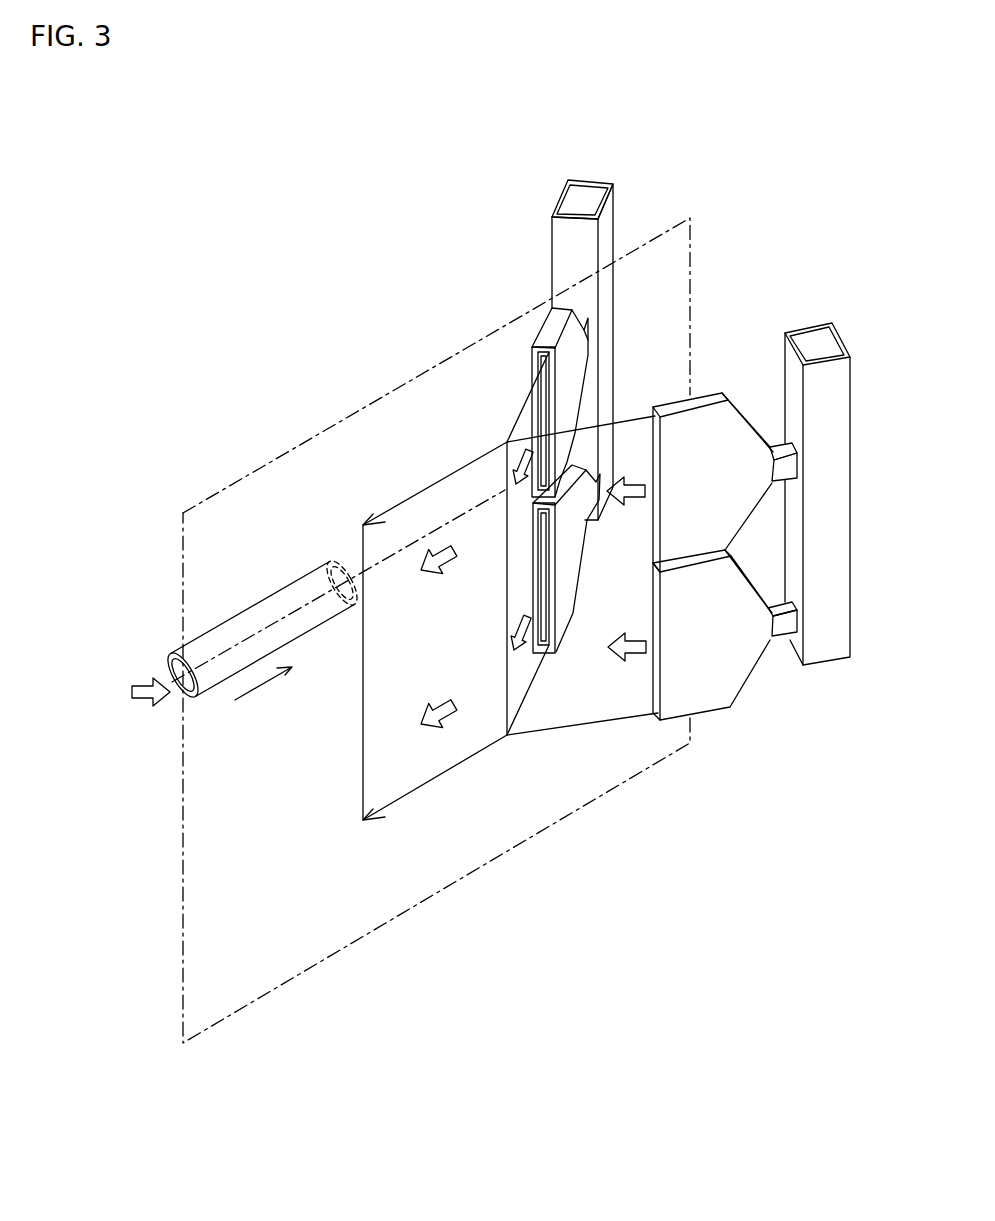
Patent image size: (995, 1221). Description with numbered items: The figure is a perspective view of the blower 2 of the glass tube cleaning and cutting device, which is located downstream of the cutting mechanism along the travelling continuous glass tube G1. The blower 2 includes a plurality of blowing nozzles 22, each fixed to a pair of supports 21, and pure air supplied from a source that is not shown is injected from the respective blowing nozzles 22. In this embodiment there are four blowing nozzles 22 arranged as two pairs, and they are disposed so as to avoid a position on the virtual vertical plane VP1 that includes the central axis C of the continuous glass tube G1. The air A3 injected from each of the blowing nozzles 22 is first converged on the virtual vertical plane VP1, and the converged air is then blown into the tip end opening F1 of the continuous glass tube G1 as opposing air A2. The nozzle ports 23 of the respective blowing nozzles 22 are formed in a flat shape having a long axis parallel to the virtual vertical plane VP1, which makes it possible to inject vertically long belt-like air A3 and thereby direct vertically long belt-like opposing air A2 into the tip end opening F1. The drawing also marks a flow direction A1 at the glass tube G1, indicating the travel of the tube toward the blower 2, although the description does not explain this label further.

The blower 2 is at (511, 203).
The support 21 is at (568, 268).
The blowing nozzle 22 is at (552, 325).
The nozzle port 23 is at (543, 386).
The virtual vertical plane VP1 is at (258, 470).
The central axis C is at (232, 647).
The continuous glass tube G1 is at (278, 593).
The tip end opening F1 is at (350, 565).
The gas flow direction A1 is at (148, 710).
The opposing air A2 is at (435, 631).
The air A3 is at (582, 543).